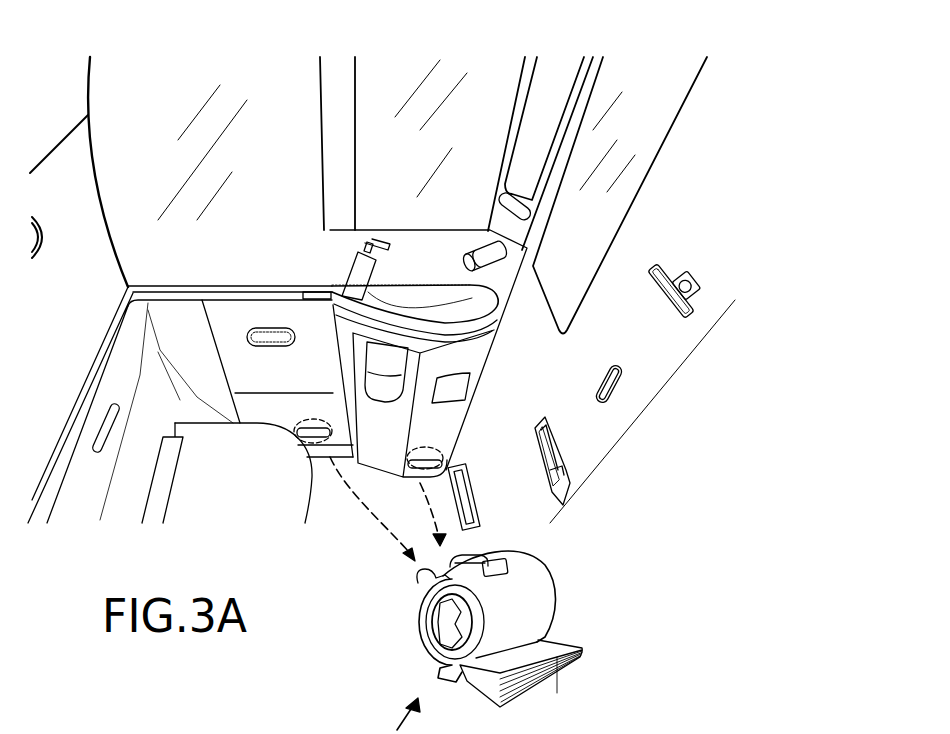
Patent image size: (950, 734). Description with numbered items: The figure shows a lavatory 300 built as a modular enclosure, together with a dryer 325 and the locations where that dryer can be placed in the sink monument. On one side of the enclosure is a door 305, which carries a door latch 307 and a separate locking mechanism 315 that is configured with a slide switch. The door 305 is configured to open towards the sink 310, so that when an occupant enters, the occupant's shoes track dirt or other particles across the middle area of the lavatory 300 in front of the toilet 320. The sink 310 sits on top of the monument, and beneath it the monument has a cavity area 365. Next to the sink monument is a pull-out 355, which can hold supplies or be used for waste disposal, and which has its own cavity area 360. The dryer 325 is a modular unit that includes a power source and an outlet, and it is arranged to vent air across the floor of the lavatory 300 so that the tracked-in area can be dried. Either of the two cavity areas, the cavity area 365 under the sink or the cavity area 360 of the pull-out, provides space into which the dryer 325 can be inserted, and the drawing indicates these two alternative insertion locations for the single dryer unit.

The lavatory 300 is at (716, 177).
The door 305 is at (645, 375).
The door latch 307 is at (578, 463).
The sink 310 is at (435, 290).
The locking mechanism 315 is at (705, 293).
The toilet 320 is at (215, 450).
The dryer 325 is at (418, 627).
The pull-out 355 is at (238, 338).
The cavity area 360 is at (318, 415).
The cavity area 365 is at (403, 460).